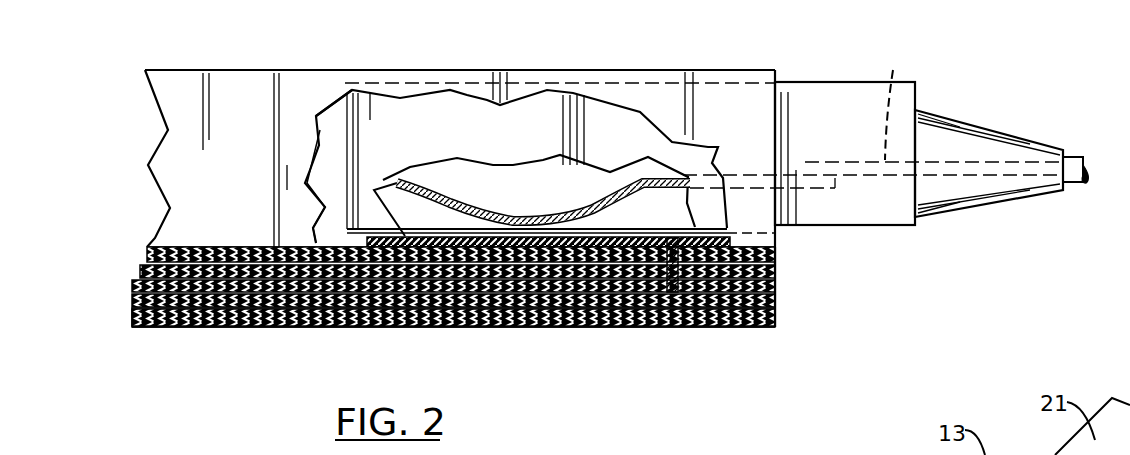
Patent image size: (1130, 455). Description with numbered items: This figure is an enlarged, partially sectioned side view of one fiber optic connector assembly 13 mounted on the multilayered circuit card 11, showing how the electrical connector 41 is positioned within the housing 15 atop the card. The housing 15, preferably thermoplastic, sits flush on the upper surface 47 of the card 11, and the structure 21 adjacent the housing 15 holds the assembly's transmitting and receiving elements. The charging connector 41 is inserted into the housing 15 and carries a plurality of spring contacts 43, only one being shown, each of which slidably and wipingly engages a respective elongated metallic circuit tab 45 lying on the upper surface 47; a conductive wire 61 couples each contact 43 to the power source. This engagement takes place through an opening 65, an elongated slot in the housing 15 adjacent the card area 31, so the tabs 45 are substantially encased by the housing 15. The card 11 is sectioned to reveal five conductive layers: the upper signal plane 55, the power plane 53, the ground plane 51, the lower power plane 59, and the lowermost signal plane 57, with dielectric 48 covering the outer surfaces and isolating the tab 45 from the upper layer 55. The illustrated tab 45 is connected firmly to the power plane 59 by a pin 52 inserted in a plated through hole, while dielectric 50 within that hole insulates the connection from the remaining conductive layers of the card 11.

The circuit card 11 is at (603, 331).
The fiber optic connector assembly 13 is at (261, 64).
The housing 15 is at (415, 68).
The structure 21 is at (160, 70).
The card area 31 is at (630, 219).
The electrical connector 41 is at (815, 80).
The electrical contact 43 is at (500, 208).
The conductive circuit tab 45 is at (415, 230).
The upper surface 47 is at (590, 216).
The dielectric 48 is at (238, 241).
The dielectric 50 is at (777, 280).
The ground plane 51 is at (137, 282).
The pin 52 is at (715, 324).
The power plane 53 is at (147, 270).
The upper layer 55 is at (142, 245).
The lowermost layer 57 is at (128, 317).
The power plane 59 is at (132, 302).
The conductive wire 61 is at (888, 70).
The opening 65 is at (335, 226).